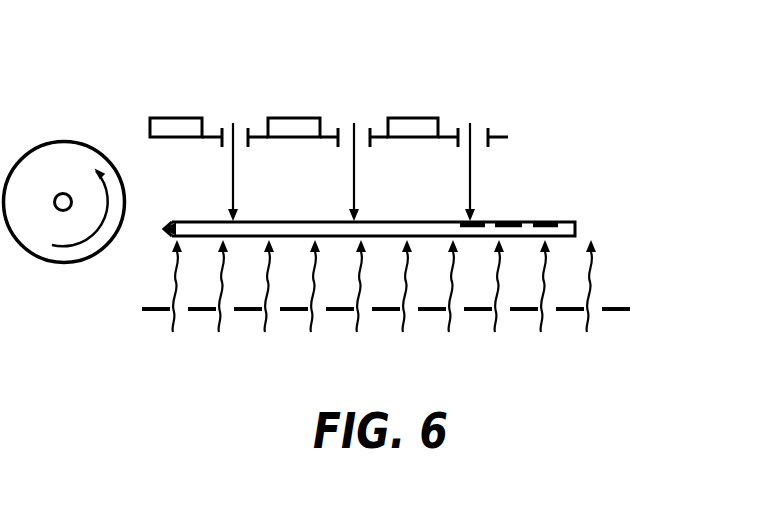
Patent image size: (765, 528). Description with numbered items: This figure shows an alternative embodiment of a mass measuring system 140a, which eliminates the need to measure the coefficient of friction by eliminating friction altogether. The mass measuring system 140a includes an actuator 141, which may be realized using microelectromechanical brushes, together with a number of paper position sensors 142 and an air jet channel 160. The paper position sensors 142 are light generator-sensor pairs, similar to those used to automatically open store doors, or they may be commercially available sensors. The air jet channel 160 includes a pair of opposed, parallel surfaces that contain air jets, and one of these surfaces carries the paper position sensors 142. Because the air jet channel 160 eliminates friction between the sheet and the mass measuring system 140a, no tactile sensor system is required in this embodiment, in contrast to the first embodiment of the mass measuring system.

The actuator 141 is at (47, 141).
The paper position sensors 142 is at (165, 118).
The mass measuring system 140a is at (541, 94).
The air jet channel 160 is at (153, 312).